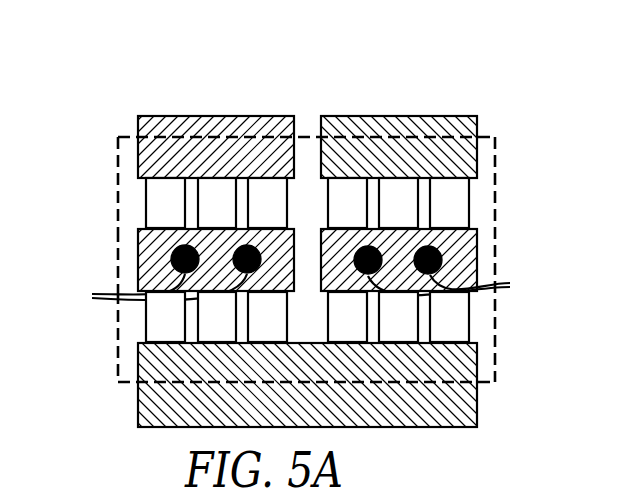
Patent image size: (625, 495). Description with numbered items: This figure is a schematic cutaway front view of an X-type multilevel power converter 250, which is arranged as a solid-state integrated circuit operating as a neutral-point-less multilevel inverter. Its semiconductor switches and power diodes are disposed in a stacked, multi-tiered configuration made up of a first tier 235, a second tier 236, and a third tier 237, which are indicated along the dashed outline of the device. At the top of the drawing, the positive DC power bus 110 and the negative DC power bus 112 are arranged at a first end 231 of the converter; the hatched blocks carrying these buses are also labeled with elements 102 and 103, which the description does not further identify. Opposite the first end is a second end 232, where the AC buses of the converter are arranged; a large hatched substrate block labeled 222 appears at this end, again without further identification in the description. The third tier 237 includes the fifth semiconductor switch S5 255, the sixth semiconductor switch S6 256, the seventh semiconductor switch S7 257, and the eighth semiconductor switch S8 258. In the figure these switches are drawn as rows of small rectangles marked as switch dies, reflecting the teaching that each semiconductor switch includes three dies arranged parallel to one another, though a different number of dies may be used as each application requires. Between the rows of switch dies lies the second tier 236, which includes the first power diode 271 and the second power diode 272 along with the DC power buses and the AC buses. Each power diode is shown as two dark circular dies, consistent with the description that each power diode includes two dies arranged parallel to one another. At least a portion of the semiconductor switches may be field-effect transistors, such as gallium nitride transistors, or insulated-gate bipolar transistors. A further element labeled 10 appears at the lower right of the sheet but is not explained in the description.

The X-type multilevel power converter 250 is at (302, 72).
The first semiconductor die 102 is at (216, 112).
The positive DC power bus 110 is at (214, 115).
The second semiconductor die 103 is at (399, 112).
The negative DC power bus 112 is at (398, 115).
The first end 231 is at (261, 214).
The third tier 237 is at (308, 183).
The second tier 236 is at (295, 261).
The first tier 235 is at (307, 337).
The second end 232 is at (258, 386).
The substrate 222 is at (135, 399).
The fifth semiconductor switch 255 is at (150, 188).
The fifth semiconductor switch S5 is at (142, 193).
The eighth semiconductor switch 258 is at (465, 192).
The eighth semiconductor switch S8 is at (474, 193).
The sixth semiconductor switch 256 is at (148, 325).
The sixth semiconductor switch S6 is at (142, 320).
The seventh semiconductor switch 257 is at (466, 326).
The seventh semiconductor switch S7 is at (474, 318).
The first power diode 271 is at (168, 262).
The second power diode 272 is at (446, 262).
The semiconductor package 10 is at (615, 419).